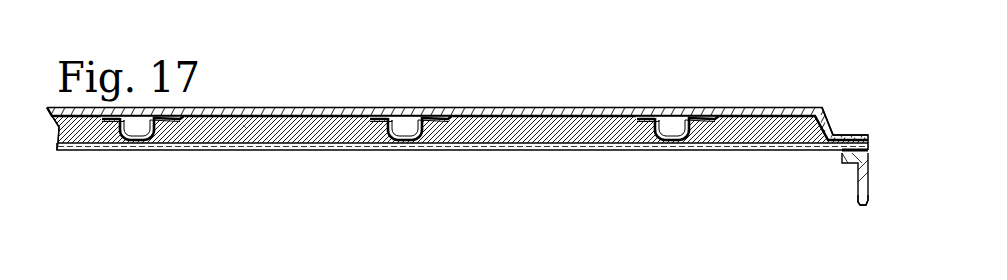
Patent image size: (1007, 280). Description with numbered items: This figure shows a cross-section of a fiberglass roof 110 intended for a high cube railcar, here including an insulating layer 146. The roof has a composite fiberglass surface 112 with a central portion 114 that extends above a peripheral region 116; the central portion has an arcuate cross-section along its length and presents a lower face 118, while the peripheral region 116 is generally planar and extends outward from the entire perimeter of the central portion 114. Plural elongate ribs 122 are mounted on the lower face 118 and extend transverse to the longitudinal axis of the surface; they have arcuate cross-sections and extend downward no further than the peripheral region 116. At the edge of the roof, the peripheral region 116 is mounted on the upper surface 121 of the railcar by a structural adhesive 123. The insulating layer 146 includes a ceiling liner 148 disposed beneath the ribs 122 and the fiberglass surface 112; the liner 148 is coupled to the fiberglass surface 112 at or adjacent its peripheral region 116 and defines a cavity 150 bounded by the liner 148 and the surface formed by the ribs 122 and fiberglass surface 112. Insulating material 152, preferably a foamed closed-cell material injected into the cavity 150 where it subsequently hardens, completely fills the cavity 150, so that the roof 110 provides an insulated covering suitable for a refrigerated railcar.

The fiberglass roof 110 is at (481, 143).
The fiberglass surface 112 is at (838, 127).
The central portion 114 is at (524, 108).
The peripheral region 116 is at (865, 136).
The lower face 118 is at (245, 128).
The upper surface 121 is at (871, 201).
The elongate ribs 122 is at (432, 127).
The structural adhesive 123 is at (870, 153).
The insulating layer 146 is at (50, 150).
The ceiling liner 148 is at (208, 150).
The cavity 150 is at (351, 124).
The insulating material 152 is at (602, 142).